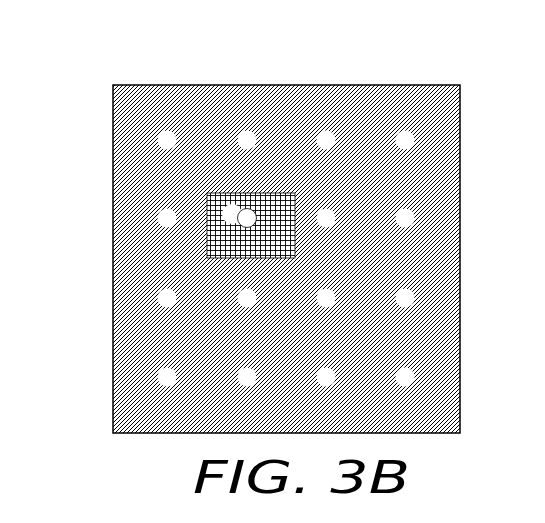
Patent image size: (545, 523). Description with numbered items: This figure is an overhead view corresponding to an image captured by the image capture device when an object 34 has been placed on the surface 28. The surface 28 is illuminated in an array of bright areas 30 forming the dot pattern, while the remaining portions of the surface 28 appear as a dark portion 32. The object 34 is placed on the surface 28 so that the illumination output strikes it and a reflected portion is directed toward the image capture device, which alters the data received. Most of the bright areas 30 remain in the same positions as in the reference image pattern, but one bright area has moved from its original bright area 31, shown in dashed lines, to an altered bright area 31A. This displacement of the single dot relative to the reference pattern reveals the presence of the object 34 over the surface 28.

The surface 28 is at (140, 151).
The bright areas 30 is at (408, 212).
The original bright area 31 is at (255, 211).
The altered bright area 31A is at (227, 203).
The dark portion 32 is at (124, 338).
The object 34 is at (210, 244).